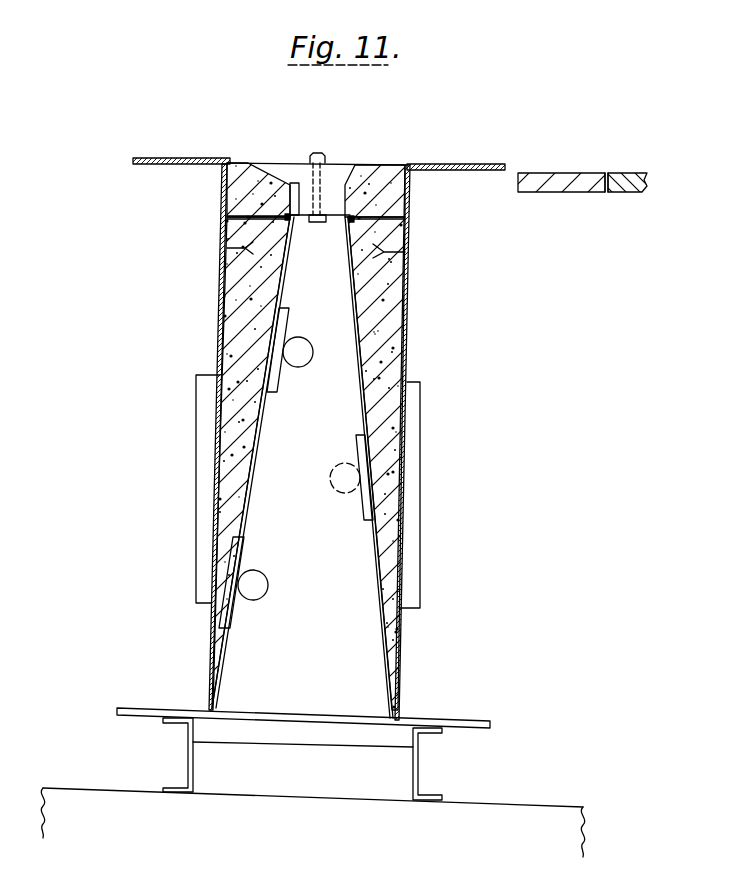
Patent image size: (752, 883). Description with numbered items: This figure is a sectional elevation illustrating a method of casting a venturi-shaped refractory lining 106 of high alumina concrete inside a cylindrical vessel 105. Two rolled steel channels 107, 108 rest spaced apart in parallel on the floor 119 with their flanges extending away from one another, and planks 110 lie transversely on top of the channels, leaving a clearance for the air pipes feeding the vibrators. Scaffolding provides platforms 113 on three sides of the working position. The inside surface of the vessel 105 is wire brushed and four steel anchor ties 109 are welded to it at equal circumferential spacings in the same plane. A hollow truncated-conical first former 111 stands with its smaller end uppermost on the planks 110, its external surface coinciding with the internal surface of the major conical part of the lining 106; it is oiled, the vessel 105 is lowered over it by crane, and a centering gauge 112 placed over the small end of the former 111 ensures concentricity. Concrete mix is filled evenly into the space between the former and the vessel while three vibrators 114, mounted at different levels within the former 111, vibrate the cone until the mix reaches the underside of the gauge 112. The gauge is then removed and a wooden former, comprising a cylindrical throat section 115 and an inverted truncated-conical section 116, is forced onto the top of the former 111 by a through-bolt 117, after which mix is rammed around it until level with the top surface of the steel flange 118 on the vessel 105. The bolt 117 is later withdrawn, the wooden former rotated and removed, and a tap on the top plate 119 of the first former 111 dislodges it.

The cylindrical vessel 105 is at (218, 405).
The venturi-shaped refractory lining 106 is at (234, 303).
The rolled steel channel 107 is at (188, 767).
The rolled steel channel 108 is at (418, 757).
The steel anchor ties 109 is at (232, 248).
The planks 110 is at (455, 720).
The hollow truncated-conical first former 111 is at (380, 580).
The centering gauge 112 is at (398, 210).
The platforms 113 is at (550, 178).
The vibrators 114 is at (303, 350).
The cylindrical throat section 115 is at (292, 195).
The inverted truncated-conical section 116 is at (262, 172).
The through-bolt 117 is at (308, 162).
The steel flange 118 is at (427, 165).
The floor 119 is at (332, 210).